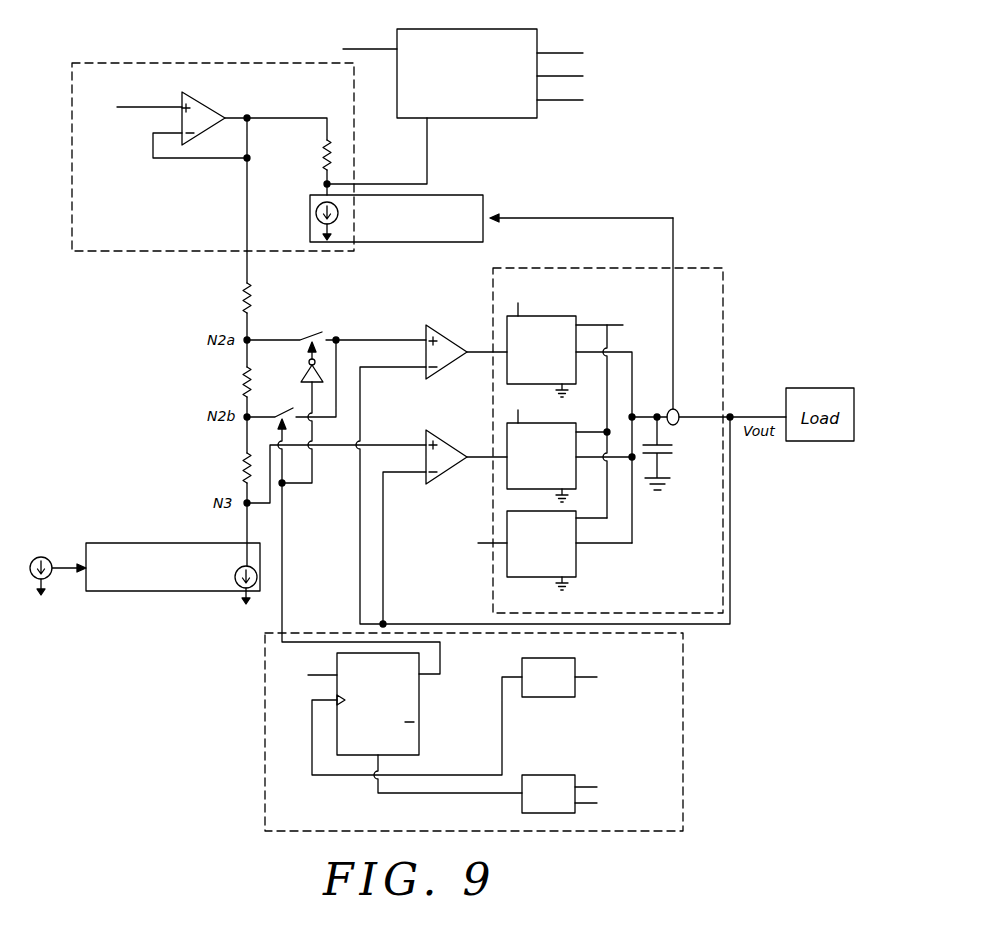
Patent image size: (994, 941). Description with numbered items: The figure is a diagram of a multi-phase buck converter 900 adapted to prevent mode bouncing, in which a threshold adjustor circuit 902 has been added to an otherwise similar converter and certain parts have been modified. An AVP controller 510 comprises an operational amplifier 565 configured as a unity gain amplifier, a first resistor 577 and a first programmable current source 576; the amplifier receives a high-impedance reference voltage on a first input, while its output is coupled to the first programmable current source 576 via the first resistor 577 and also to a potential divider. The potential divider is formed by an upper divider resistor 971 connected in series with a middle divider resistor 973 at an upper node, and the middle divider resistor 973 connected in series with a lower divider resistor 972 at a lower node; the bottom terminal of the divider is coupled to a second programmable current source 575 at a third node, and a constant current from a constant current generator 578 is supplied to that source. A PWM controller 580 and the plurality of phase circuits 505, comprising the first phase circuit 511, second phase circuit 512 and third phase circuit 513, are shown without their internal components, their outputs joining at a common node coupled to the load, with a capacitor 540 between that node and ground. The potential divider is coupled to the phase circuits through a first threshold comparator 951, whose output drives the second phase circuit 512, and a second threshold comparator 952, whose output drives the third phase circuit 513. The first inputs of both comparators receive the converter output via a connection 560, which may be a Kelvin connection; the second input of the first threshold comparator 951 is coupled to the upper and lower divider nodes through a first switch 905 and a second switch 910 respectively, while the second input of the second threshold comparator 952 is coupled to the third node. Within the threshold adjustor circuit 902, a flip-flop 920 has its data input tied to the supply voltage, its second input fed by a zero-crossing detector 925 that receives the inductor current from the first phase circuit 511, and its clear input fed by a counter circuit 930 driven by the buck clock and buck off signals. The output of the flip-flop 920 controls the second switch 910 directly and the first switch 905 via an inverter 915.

The AVP controller 510 is at (130, 63).
The operational amplifier 565 is at (213, 102).
The resistor R1 577 is at (318, 158).
The PWM controller 580 is at (478, 106).
The first programmable current source 576 is at (486, 211).
The plurality of phase circuits 505 is at (697, 268).
The first resistor R2a 971 is at (236, 299).
The third resistor R2b 973 is at (235, 380).
The second resistor R3 972 is at (235, 470).
The first switch 905 is at (302, 330).
The inverter 915 is at (302, 375).
The second switch 910 is at (271, 412).
The first threshold comparator 951 is at (450, 332).
The second threshold comparator 952 is at (450, 437).
The second phase circuit 512 is at (563, 415).
The third phase circuit 513 is at (563, 448).
The first phase circuit 511 is at (532, 550).
The capacitor 540 is at (666, 458).
The connection 560 is at (725, 608).
The second programmable current source 575 is at (138, 543).
The constant current generator 578 is at (38, 554).
The threshold adjustor circuit 902 is at (683, 683).
The flip-flop 920 is at (419, 697).
The zero-crossing detector 925 is at (560, 677).
The counter circuit 930 is at (584, 794).
The multi-phase buck converter 900 is at (185, 818).